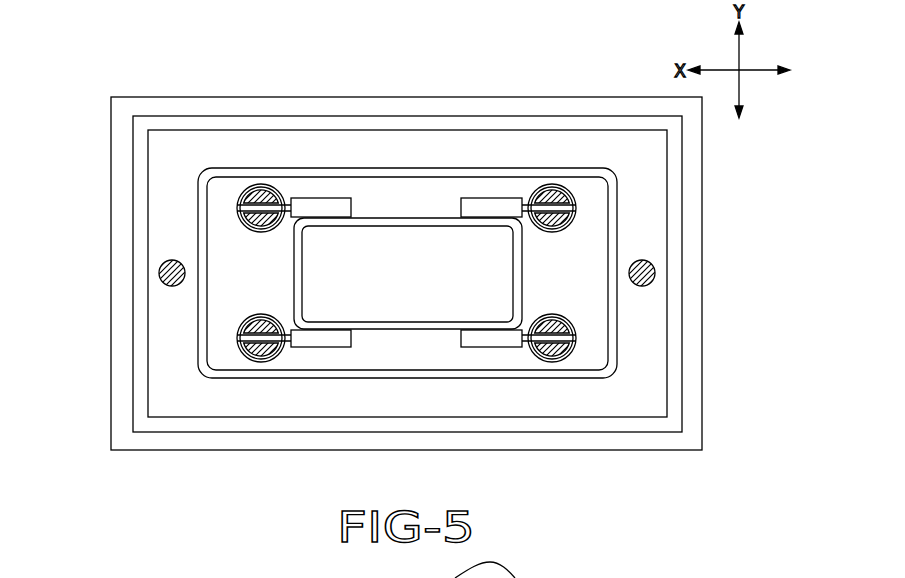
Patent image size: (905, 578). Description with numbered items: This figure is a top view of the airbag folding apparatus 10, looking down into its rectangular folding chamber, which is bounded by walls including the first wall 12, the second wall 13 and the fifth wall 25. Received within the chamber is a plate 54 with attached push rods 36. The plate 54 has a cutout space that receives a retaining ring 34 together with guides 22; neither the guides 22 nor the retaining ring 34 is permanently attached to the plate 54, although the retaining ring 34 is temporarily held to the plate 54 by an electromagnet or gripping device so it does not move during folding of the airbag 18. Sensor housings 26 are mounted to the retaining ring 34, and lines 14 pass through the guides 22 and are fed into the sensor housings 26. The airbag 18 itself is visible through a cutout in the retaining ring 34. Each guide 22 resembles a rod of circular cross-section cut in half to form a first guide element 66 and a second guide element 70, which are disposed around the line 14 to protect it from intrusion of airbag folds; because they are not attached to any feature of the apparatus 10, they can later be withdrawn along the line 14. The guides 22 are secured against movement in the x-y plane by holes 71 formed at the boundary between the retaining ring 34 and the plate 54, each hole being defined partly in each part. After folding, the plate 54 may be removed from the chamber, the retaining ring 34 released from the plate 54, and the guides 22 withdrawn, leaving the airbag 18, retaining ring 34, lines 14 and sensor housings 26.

The airbag folding apparatus 10 is at (82, 122).
The first wall 12 is at (120, 240).
The second wall 13 is at (687, 405).
The lines 14 is at (237, 224).
The airbag 18 is at (417, 286).
The guides 22 is at (262, 200).
The fifth wall 25 is at (642, 440).
The sensor housings 26 is at (318, 207).
The retaining ring 34 is at (220, 338).
The push rods 36 is at (160, 275).
The plate 54 is at (383, 153).
The first guide element 66 is at (560, 200).
The second guide element 70 is at (565, 225).
The holes 71 is at (240, 205).